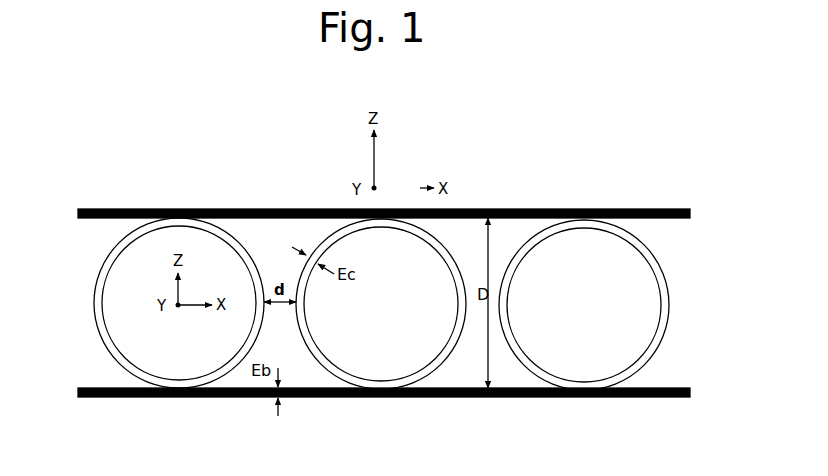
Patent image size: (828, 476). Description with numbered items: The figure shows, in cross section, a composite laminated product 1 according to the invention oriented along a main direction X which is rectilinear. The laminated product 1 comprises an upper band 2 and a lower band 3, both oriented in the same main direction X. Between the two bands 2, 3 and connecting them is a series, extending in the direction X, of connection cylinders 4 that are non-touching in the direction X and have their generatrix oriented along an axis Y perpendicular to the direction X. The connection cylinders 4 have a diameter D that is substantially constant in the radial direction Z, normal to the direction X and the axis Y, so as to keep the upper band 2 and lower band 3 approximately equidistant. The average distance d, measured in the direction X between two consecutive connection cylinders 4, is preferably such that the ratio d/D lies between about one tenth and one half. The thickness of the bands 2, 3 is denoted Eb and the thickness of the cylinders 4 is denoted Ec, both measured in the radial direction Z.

The composite laminated product 1 is at (516, 179).
The upper band 2 is at (98, 213).
The lower band 3 is at (122, 392).
The connection cylinders 4 is at (103, 287).